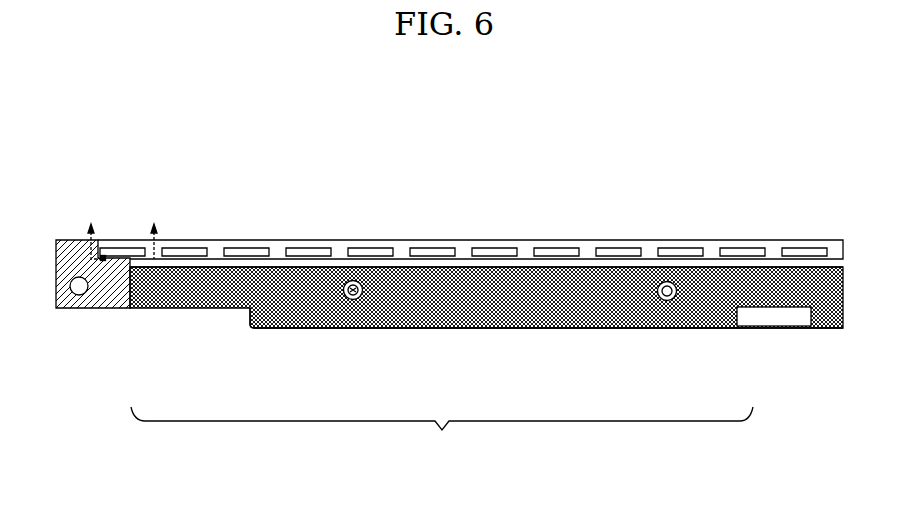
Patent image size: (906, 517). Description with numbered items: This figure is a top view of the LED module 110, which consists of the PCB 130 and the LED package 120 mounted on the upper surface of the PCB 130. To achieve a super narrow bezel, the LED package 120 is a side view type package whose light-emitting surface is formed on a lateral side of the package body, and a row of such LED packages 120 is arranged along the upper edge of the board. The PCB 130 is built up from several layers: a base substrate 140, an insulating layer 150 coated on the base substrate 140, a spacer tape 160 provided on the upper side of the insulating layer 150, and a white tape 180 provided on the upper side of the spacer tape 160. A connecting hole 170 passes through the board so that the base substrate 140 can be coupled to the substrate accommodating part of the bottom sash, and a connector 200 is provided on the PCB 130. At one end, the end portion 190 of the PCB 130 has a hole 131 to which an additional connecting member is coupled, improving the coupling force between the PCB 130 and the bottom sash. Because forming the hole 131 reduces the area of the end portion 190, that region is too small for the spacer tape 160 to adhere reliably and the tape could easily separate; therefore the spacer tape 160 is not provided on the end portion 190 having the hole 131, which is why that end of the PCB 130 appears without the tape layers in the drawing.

The LED module 110 is at (440, 88).
The LED package 120 is at (382, 252).
The PCB 130 is at (442, 434).
The hole 131 is at (78, 292).
The base substrate 140 is at (486, 328).
The insulating layer 150 is at (345, 298).
The spacer tape 160 is at (273, 313).
The connecting hole 170 is at (363, 299).
The white tape 180 is at (537, 263).
The end portion 190 is at (94, 316).
The connector 200 is at (758, 318).